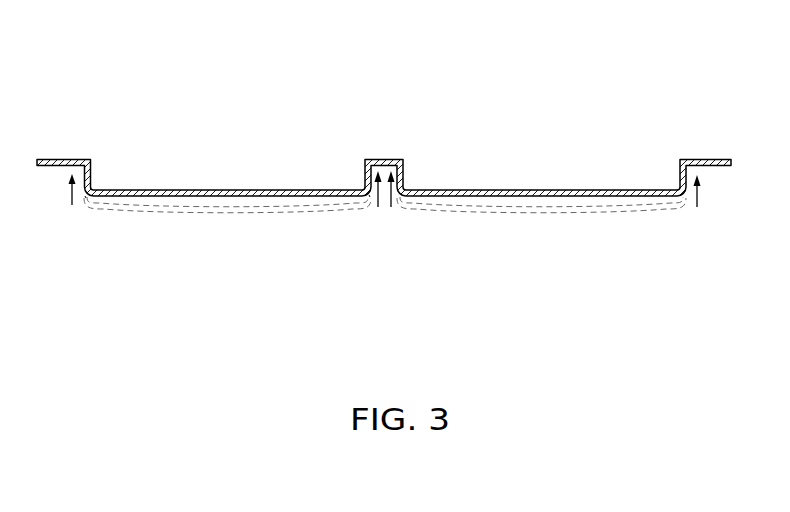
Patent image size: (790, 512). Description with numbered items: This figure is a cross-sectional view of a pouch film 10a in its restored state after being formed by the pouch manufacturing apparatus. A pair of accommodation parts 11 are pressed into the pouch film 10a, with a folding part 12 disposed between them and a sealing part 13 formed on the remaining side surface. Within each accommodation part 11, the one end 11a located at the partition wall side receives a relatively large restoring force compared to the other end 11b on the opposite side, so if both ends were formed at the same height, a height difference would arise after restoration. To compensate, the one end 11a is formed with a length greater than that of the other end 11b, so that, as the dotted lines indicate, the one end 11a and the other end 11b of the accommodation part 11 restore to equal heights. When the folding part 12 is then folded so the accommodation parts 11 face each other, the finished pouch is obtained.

The pouch film 10a is at (342, 60).
The accommodation part 11 is at (228, 190).
The one end of the accommodation part 11a is at (369, 195).
The other end of the accommodation part 11b is at (85, 196).
The folding part 12 is at (385, 160).
The sealing part 13 is at (63, 160).